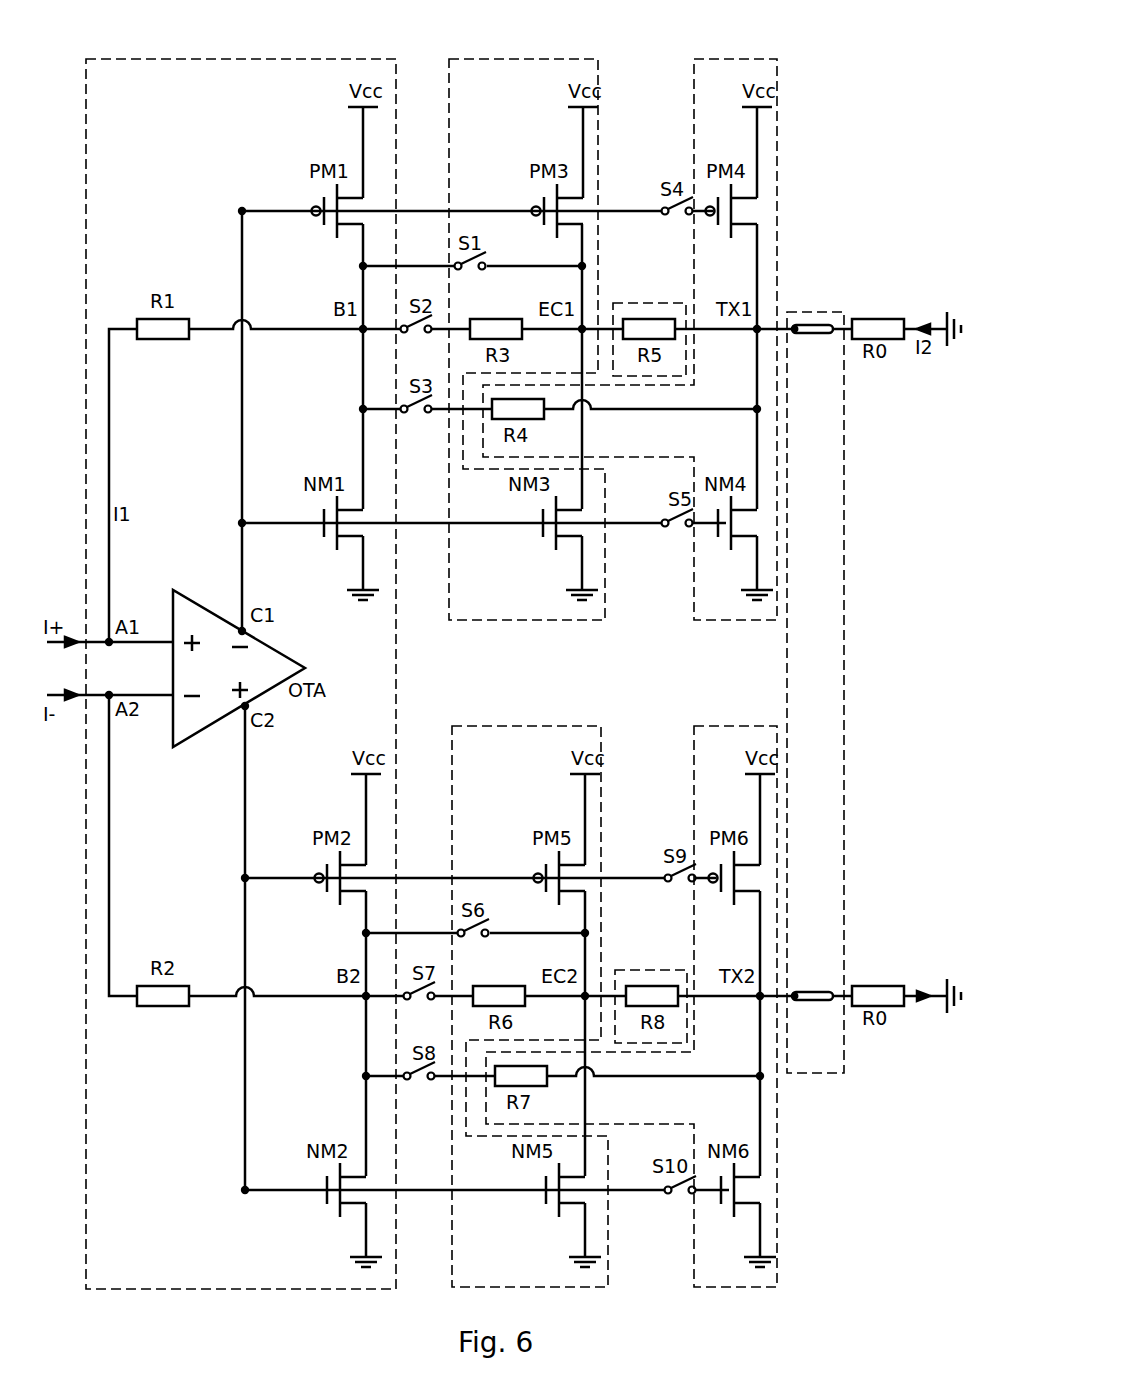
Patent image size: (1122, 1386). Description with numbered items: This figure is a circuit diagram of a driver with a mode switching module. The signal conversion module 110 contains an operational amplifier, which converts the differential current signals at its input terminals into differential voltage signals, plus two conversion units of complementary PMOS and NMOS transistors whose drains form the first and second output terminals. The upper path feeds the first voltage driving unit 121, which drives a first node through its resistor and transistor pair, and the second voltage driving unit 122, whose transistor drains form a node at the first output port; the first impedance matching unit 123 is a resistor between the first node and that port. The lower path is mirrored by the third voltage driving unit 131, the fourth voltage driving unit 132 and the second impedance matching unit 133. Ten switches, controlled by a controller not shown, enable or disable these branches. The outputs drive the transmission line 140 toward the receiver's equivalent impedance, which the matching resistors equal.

The signal conversion module 110 is at (195, 59).
The first voltage driving unit 121 is at (533, 60).
The second voltage driving unit 122 is at (651, 303).
The first impedance matching unit 123 is at (738, 60).
The third voltage driving unit 131 is at (536, 727).
The fourth voltage driving unit 132 is at (671, 951).
The second impedance matching unit 133 is at (740, 727).
The transmission line 140 is at (845, 652).